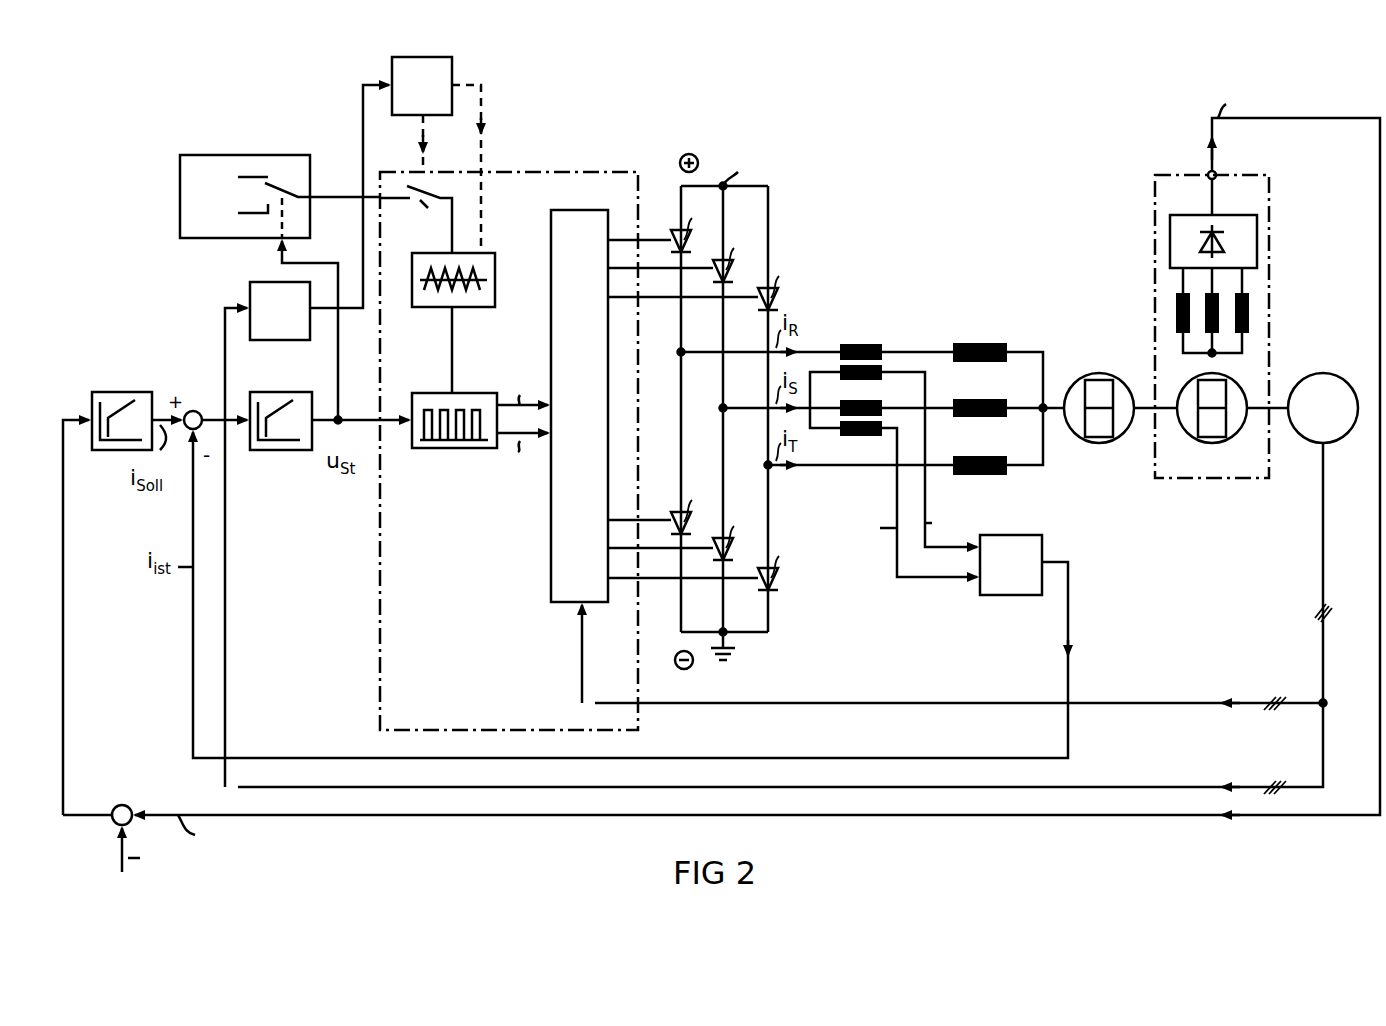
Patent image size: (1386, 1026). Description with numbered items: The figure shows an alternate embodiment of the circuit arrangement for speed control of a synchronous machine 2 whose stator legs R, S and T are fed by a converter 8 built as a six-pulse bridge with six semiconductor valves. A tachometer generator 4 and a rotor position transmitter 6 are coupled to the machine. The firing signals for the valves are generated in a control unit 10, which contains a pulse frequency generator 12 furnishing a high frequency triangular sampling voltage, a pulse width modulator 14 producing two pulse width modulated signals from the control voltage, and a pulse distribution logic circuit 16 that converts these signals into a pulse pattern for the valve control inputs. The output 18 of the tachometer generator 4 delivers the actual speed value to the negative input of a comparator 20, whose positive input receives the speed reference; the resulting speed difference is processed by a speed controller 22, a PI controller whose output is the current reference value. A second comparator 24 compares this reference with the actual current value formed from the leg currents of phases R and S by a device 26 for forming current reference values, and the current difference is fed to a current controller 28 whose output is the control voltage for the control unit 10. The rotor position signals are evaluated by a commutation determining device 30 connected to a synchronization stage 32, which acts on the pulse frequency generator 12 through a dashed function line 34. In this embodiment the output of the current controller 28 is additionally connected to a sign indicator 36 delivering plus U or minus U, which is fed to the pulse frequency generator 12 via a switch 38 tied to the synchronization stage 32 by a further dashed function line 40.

The synchronous machine 2 is at (1080, 349).
The tachometer generator 4 is at (1269, 312).
The rotor position transmitter 6 is at (1324, 373).
The converter 8 is at (714, 400).
The control unit 10 is at (380, 564).
The pulse frequency generator 12 is at (495, 268).
The pulse width modulator 14 is at (432, 448).
The pulse distribution logic circuit 16 is at (551, 332).
The output of the tachometer generator 18 is at (1216, 171).
The comparator 20 is at (120, 805).
The speed controller 22 is at (107, 392).
The second comparator 24 is at (197, 411).
The device for forming current reference values 26 is at (1042, 540).
The current controller 28 is at (268, 392).
The commutation determining device 30 is at (250, 298).
The synchronization stage 32 is at (452, 72).
The function line 34 is at (481, 105).
The sign indicator 36 is at (236, 137).
The switch 38 is at (416, 219).
The further function line 40 is at (423, 128).